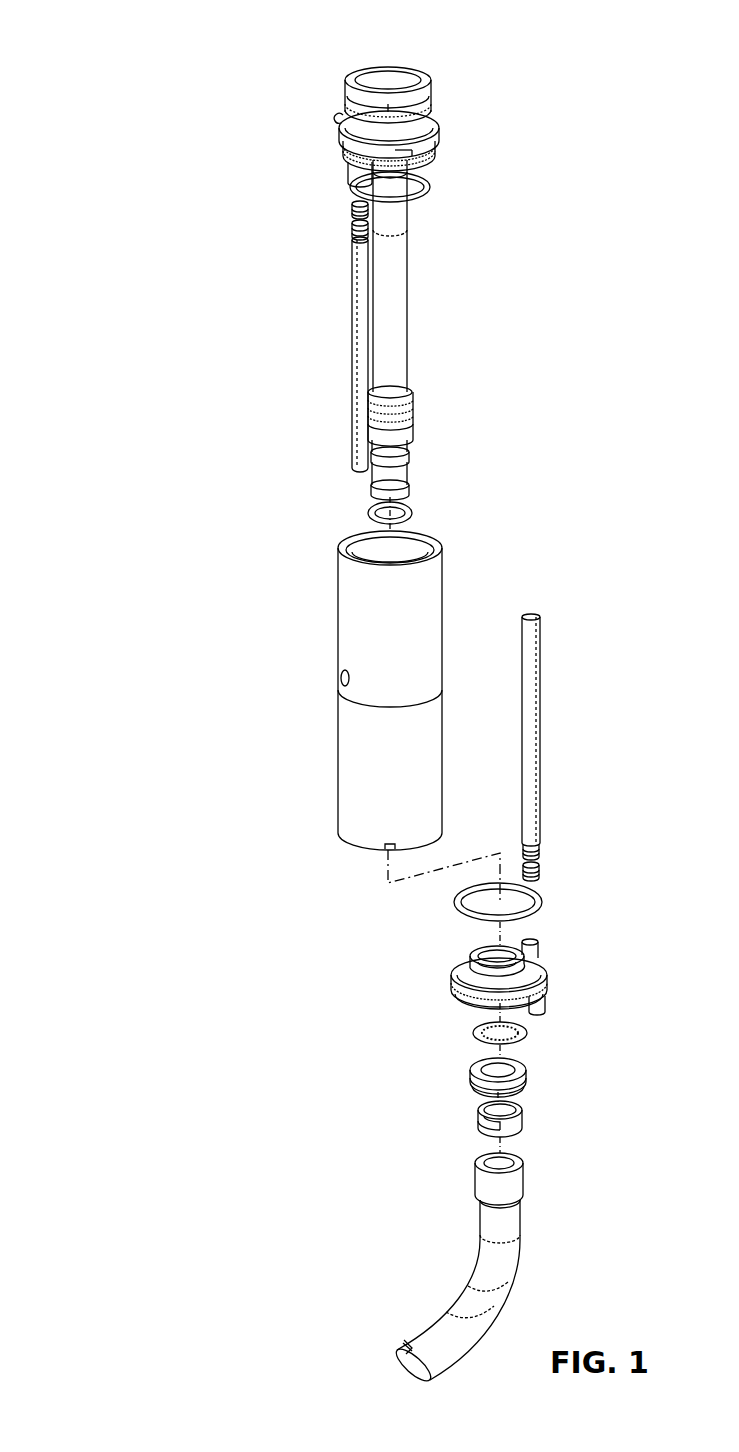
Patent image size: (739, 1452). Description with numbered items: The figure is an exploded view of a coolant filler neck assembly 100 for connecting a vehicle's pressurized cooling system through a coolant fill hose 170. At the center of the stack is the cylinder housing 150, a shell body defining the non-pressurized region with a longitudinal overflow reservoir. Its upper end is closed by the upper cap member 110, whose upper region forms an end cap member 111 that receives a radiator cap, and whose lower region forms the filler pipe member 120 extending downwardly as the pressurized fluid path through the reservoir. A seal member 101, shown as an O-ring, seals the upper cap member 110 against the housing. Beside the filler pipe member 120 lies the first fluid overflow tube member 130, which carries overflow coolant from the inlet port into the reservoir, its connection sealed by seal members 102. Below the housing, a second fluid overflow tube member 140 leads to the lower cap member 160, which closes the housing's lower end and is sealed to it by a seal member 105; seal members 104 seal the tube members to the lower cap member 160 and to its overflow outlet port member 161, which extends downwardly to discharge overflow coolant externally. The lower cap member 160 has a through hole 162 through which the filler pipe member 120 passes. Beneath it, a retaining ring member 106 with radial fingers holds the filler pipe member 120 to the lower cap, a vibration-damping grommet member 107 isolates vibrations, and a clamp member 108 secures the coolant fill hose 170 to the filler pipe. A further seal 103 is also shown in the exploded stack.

The coolant filler neck assembly 100 is at (78, 68).
The upper cap member 110 is at (333, 109).
The end cap member 111 is at (427, 112).
The seal member 101 is at (428, 186).
The seal member 102 is at (355, 224).
The filler pipe member 120 is at (400, 302).
The first fluid overflow tube member 130 is at (357, 381).
The O-ring 103 is at (407, 508).
The cylinder housing 150 is at (350, 637).
The second fluid overflow tube member 140 is at (533, 745).
The seal member 104 is at (538, 876).
The seal member 105 is at (539, 912).
The lower cap member 160 is at (455, 967).
The through hole 162 is at (472, 952).
The overflow outlet port member 161 is at (539, 998).
The retaining ring member 106 is at (477, 1028).
The vibration-damping grommet member 107 is at (524, 1075).
The clamp member 108 is at (480, 1117).
The coolant fill hose 170 is at (481, 1271).